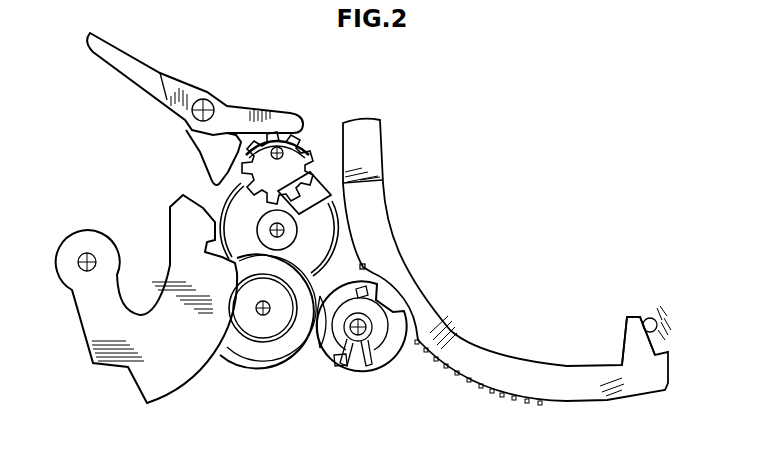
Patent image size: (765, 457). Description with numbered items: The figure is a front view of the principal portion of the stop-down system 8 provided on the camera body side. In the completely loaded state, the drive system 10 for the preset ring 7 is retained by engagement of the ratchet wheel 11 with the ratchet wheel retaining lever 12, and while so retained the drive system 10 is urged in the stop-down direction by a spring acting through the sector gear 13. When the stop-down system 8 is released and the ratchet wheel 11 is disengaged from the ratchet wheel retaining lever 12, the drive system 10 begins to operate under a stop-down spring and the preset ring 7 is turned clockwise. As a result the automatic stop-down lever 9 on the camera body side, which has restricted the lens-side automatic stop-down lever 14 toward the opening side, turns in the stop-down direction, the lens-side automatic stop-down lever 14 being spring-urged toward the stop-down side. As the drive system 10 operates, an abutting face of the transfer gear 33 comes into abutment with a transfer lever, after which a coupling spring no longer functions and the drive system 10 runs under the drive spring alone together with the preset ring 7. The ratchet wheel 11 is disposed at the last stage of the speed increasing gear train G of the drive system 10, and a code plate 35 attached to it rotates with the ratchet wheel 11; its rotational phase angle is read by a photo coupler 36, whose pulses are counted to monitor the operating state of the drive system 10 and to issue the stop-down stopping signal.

The preset ring 7 is at (367, 158).
The stop-down system 8 is at (190, 183).
The automatic stop-down lever 9 is at (628, 316).
The drive system 10 is at (297, 368).
The ratchet wheel 11 is at (315, 130).
The ratchet wheel retaining lever 12 is at (188, 90).
The sector gear 13 is at (153, 372).
The lens-side automatic stop-down lever 14 is at (651, 317).
The transfer gear 33 is at (378, 352).
The code plate 35 is at (266, 190).
The photo coupler 36 is at (312, 198).
The speed increasing gear train G is at (327, 242).